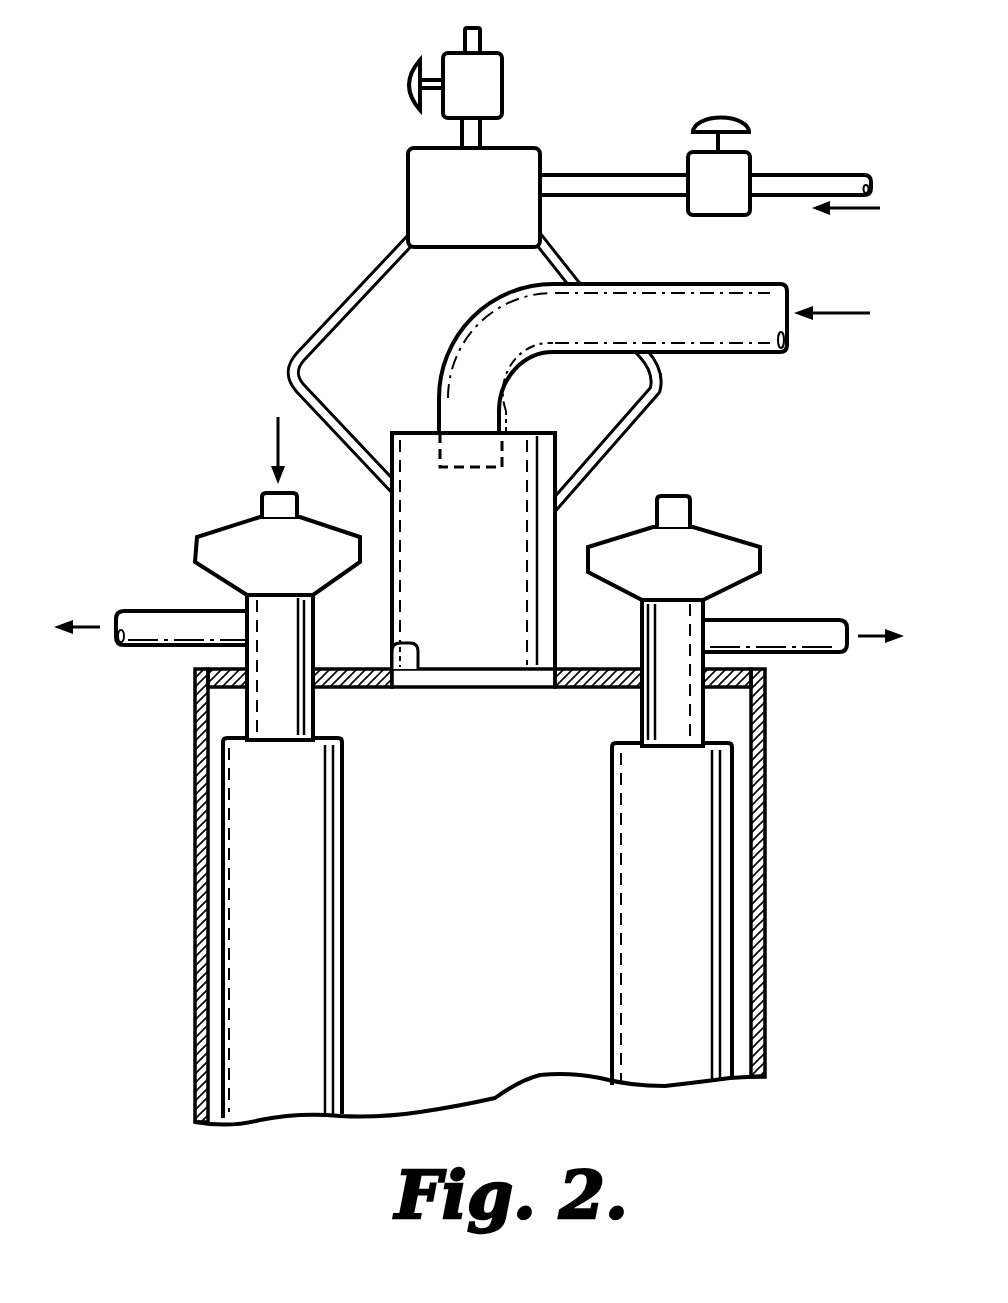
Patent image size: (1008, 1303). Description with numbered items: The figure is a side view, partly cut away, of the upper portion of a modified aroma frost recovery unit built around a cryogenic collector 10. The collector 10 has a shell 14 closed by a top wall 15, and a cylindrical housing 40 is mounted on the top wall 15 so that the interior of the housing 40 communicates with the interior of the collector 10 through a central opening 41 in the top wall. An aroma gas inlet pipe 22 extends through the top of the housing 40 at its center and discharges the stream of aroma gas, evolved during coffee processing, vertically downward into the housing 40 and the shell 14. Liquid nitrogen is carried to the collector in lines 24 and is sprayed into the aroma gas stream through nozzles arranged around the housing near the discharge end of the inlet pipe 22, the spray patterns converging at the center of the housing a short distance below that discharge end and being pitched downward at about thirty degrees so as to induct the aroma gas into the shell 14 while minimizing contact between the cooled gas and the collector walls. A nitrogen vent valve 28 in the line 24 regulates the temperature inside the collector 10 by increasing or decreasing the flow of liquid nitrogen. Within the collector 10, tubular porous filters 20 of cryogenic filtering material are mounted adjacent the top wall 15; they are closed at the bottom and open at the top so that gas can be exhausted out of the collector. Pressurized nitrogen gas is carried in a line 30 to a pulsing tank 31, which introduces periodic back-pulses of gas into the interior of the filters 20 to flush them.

The cryogenic collector 10 is at (165, 1045).
The shell 14 is at (760, 866).
The top wall 15 is at (603, 673).
The tubular porous filter 20 is at (292, 1077).
The aroma gas inlet pipe 22 is at (728, 287).
The liquid nitrogen line 24 is at (805, 177).
The nitrogen vent valve 28 is at (497, 87).
The pressurized nitrogen gas line 30 is at (260, 508).
The pulsing tank 31 is at (292, 582).
The cylindrical housing 40 is at (556, 518).
The central opening 41 is at (393, 645).